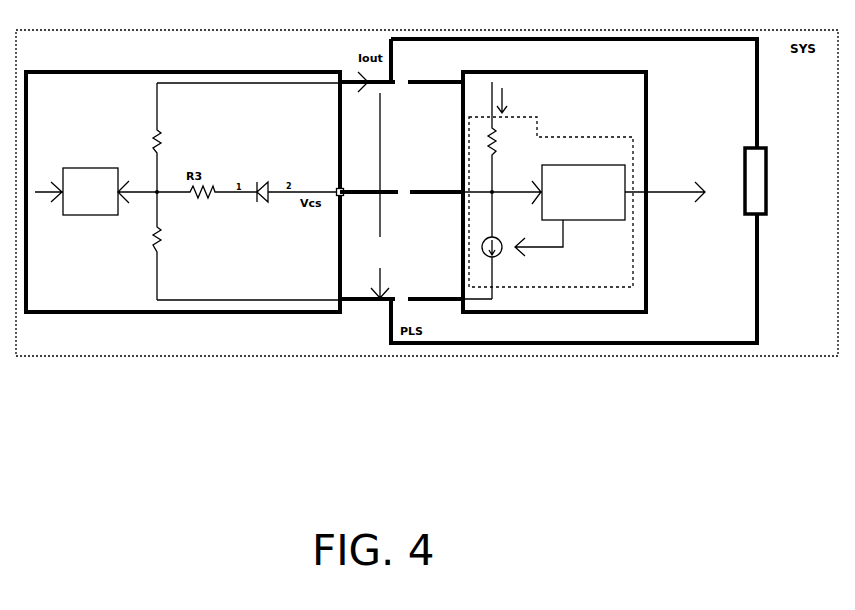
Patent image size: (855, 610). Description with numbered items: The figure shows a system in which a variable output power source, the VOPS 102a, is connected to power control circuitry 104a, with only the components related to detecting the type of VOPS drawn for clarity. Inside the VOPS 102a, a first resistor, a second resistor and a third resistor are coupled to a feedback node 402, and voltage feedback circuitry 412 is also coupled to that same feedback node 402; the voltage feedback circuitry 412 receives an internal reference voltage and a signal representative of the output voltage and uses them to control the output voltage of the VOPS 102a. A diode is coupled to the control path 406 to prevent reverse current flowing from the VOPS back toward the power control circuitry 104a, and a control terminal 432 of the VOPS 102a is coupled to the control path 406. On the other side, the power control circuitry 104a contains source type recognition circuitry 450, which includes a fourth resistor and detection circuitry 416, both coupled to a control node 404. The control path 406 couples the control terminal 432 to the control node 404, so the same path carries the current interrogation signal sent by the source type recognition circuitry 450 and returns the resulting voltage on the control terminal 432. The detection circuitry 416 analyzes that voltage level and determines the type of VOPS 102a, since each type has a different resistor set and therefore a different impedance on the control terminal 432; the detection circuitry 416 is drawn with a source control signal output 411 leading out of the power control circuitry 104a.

The VOPS 102a is at (35, 72).
The power control circuitry 104a is at (607, 72).
The feedback node 402 is at (158, 190).
The control node 404 is at (493, 191).
The control path 406 is at (397, 190).
The source control signal output 411 is at (658, 188).
The voltage feedback circuitry 412 is at (88, 215).
The detection circuitry 416 is at (584, 165).
The control terminal 432 is at (338, 198).
The source type recognition circuitry 450 is at (588, 284).